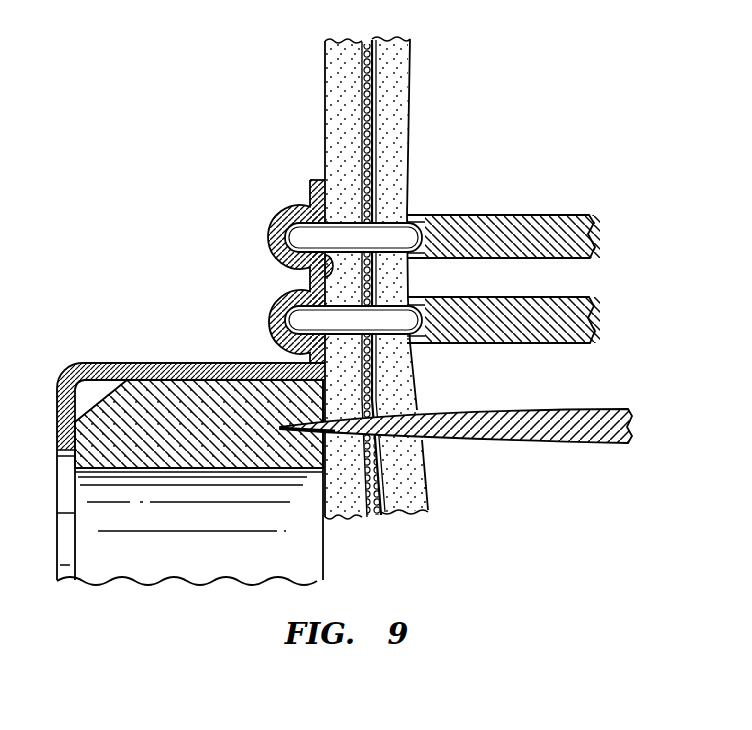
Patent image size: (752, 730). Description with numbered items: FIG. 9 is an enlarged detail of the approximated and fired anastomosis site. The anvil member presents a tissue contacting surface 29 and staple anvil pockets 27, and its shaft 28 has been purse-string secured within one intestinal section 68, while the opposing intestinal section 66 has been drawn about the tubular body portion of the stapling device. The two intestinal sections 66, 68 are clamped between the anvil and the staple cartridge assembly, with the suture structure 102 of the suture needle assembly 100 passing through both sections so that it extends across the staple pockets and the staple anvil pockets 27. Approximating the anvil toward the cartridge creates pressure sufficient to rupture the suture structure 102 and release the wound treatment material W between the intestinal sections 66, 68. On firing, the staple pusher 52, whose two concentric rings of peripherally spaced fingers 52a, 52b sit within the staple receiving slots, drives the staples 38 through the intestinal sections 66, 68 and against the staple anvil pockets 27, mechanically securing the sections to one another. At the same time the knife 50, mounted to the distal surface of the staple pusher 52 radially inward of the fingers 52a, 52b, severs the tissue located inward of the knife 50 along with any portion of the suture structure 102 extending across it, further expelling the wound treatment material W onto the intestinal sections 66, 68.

The staple anvil pocket 27 is at (275, 261).
The shaft 28 is at (110, 557).
The tissue contacting surface 29 is at (328, 262).
The staple 38 is at (345, 232).
The knife 50 is at (585, 445).
The staple pusher 52 is at (504, 265).
The fingers 52a is at (560, 217).
The fingers 52b is at (552, 343).
The intestinal section 66 is at (400, 56).
The intestinal section 68 is at (342, 64).
The suture needle assembly 100 is at (377, 86).
The suture structure 102 is at (377, 116).
The wound treatment material W is at (377, 151).